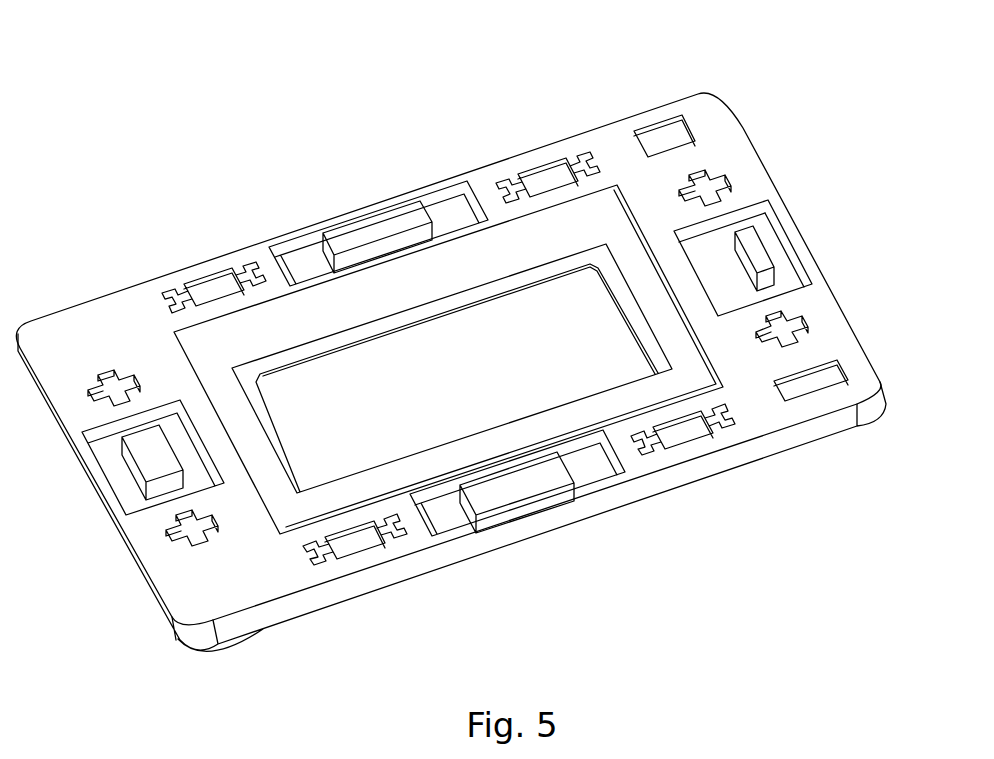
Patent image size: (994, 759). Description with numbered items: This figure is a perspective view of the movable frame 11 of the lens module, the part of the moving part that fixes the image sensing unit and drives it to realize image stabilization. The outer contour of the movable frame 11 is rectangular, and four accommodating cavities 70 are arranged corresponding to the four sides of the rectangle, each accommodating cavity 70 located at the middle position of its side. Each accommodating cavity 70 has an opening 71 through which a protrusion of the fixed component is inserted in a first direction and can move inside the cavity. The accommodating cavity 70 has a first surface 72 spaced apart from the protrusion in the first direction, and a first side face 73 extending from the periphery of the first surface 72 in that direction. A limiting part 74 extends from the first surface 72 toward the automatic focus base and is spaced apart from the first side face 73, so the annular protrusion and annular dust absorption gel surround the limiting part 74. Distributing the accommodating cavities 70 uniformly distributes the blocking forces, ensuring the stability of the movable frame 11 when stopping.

The movable frame 11 is at (476, 331).
The accommodating cavity 70 is at (806, 163).
The opening 71 is at (790, 278).
The first surface 72 is at (807, 280).
The first side face 73 is at (753, 217).
The limiting part 74 is at (738, 247).